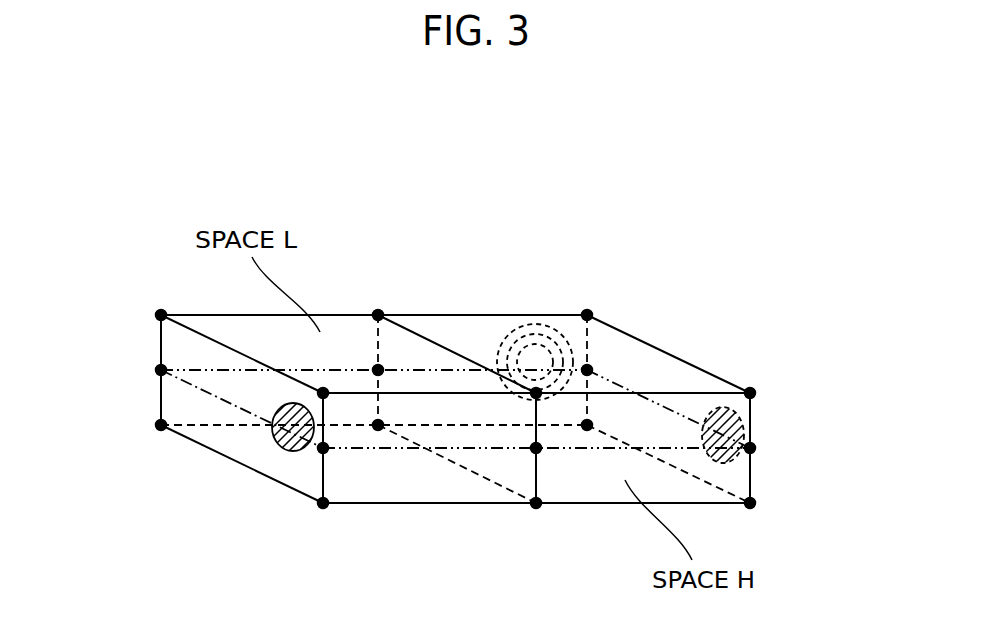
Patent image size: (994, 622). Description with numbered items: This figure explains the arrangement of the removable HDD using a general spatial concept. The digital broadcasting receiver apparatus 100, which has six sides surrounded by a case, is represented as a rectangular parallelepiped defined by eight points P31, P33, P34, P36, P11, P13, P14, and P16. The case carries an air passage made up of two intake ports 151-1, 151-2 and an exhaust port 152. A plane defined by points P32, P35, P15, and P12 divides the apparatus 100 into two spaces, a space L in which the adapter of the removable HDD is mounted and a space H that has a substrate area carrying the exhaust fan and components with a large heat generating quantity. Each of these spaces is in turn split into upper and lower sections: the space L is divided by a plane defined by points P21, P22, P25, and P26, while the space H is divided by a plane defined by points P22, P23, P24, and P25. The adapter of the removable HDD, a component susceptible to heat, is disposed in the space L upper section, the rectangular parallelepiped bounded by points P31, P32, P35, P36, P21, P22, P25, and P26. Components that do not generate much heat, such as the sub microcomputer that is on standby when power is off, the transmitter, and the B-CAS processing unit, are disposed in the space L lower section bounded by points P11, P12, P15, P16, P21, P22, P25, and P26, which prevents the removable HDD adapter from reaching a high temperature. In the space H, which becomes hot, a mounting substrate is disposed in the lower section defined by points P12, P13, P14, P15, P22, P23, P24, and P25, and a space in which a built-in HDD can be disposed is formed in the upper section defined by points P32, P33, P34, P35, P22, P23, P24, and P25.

The digital broadcasting receiver apparatus 100 is at (362, 186).
The exhaust port 152 is at (540, 325).
The intake port 151-1 is at (280, 445).
The intake port 151-2 is at (738, 420).
The point P31 is at (161, 315).
The point P21 is at (161, 370).
The point P11 is at (161, 425).
The point P36 is at (323, 393).
The point P22 is at (378, 370).
The point P32 is at (378, 315).
The point P35 is at (536, 393).
The point P33 is at (587, 315).
The point P23 is at (587, 370).
The point P13 is at (587, 425).
The point P34 is at (750, 393).
The point P24 is at (750, 448).
The point P14 is at (750, 503).
The point P25 is at (536, 448).
The point P15 is at (536, 503).
The point P12 is at (378, 425).
The point P26 is at (323, 448).
The point P16 is at (323, 503).